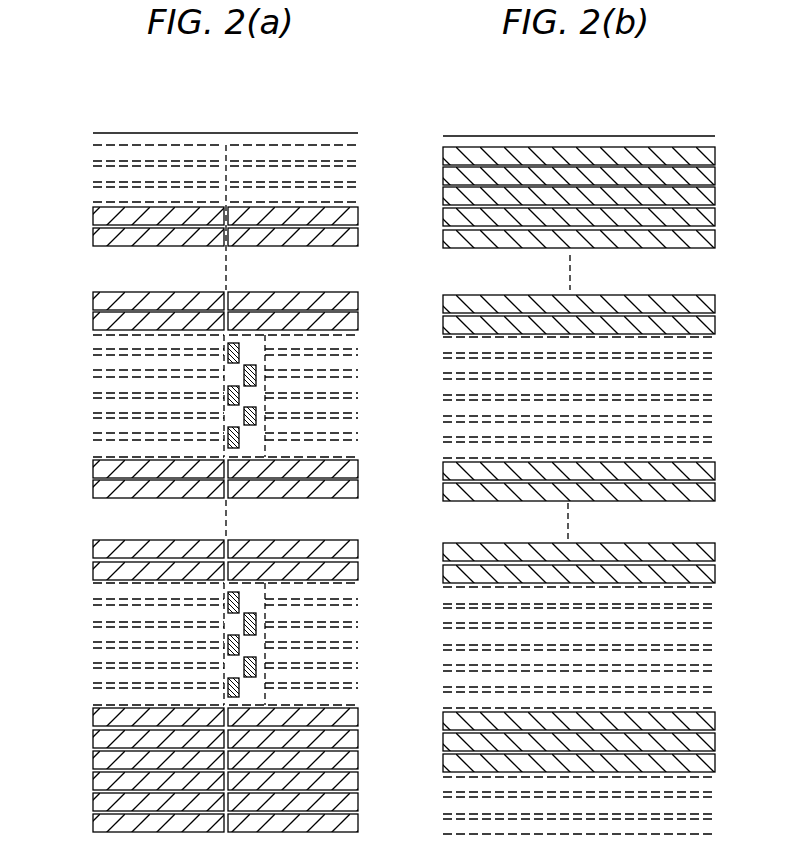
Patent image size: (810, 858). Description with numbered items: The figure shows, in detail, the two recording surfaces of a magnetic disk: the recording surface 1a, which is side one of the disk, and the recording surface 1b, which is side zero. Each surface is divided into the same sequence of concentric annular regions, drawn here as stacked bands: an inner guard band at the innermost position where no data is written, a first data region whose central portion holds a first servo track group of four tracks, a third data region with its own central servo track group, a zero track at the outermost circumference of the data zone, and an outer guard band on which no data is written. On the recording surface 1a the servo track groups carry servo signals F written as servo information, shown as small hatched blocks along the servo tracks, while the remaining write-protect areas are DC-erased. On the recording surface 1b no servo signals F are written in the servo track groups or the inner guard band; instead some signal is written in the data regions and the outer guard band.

The recording surface 1a is at (140, 127).
The recording surface 1b is at (492, 129).
The servo signals F is at (250, 365).